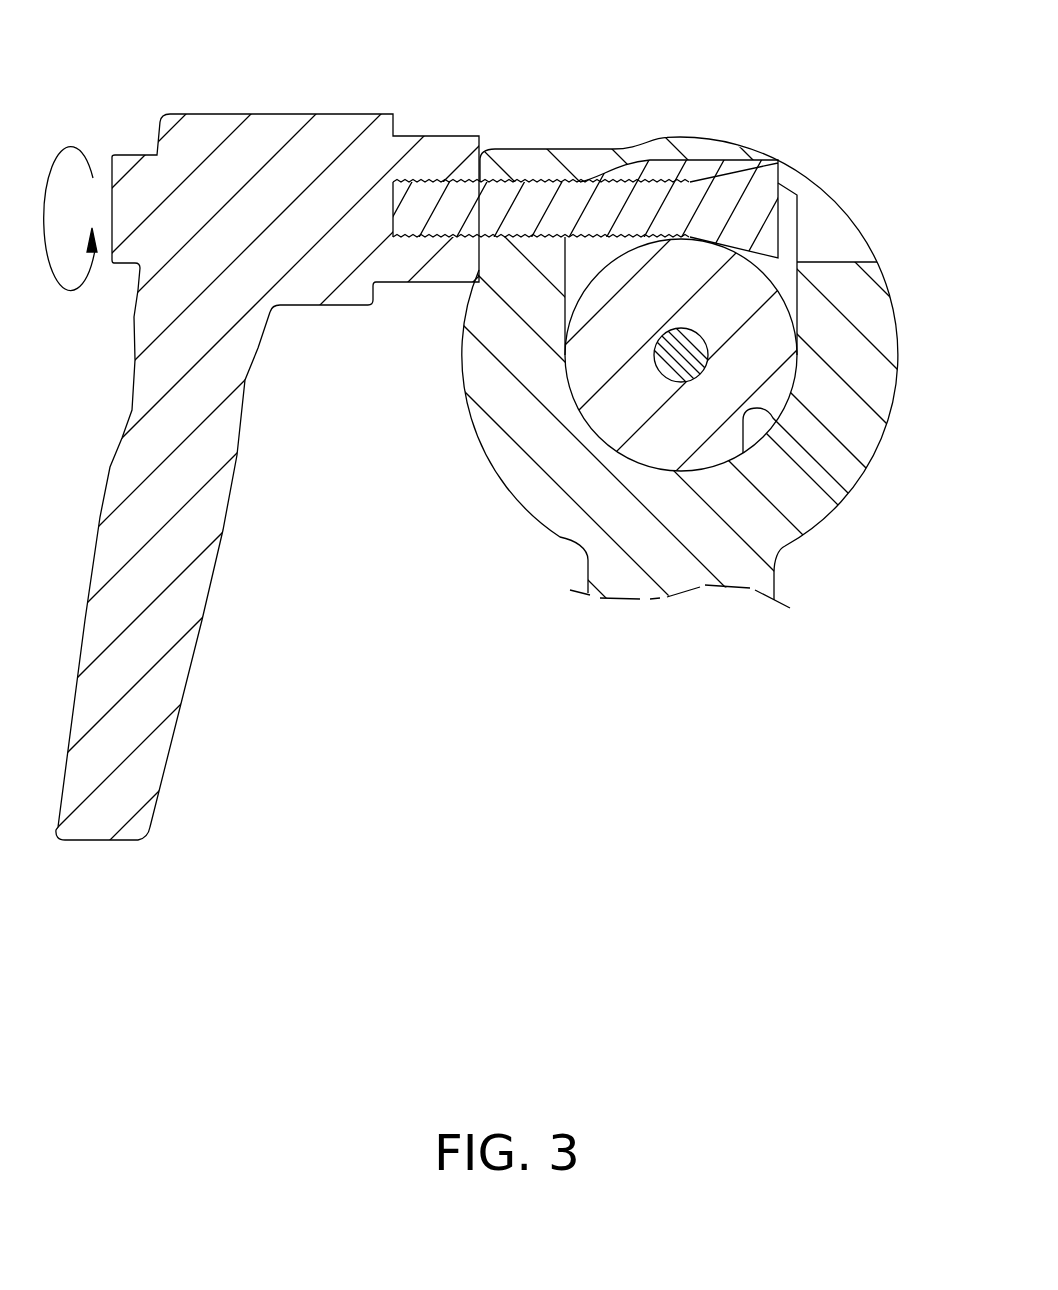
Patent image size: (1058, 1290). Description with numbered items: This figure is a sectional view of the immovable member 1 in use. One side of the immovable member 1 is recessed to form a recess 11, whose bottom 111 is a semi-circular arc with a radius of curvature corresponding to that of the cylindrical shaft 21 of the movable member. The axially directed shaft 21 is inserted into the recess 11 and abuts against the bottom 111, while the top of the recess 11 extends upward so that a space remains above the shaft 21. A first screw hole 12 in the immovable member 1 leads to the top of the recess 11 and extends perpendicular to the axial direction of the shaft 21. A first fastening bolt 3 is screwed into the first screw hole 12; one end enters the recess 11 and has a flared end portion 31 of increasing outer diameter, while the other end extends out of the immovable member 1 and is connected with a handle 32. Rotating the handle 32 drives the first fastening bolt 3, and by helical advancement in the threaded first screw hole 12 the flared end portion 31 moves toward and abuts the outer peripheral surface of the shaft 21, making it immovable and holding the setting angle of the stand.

The immovable member 1 is at (878, 402).
The recess 11 is at (788, 277).
The bottom of the recess 111 is at (836, 478).
The first screw hole 12 is at (525, 197).
The shaft 21 is at (770, 365).
The first fastening bolt 3 is at (563, 202).
The flared end portion 31 is at (713, 187).
The handle 32 is at (284, 127).